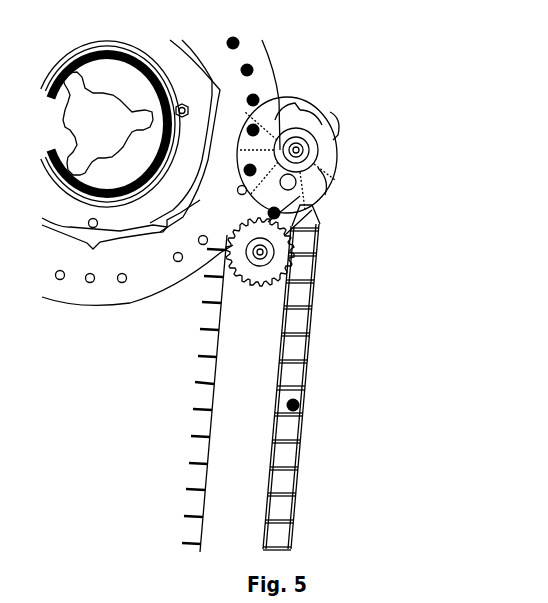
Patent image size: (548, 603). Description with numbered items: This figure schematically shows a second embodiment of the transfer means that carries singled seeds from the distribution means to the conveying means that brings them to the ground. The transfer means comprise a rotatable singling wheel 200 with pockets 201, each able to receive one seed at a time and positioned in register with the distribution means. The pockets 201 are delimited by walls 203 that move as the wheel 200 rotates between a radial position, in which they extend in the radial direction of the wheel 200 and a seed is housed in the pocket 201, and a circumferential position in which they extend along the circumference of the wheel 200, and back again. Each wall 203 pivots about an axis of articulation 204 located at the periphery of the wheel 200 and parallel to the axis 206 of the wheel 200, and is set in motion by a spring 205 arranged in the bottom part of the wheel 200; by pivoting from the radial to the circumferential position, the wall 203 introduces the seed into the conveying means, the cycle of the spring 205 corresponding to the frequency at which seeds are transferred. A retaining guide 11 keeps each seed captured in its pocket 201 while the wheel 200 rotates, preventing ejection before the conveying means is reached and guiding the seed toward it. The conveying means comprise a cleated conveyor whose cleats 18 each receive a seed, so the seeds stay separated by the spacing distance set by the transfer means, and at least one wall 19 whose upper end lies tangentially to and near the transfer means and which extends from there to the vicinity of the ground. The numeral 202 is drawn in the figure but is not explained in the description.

The retaining guide 11 is at (237, 140).
The cleats 18 is at (280, 493).
The wall 19 is at (312, 230).
The singling wheel 200 is at (378, 98).
The pockets 201 is at (285, 108).
The second jaw 202 is at (328, 168).
The walls 203 is at (307, 117).
The axis of articulation 204 is at (335, 120).
The spring 205 is at (300, 152).
The axis 206 is at (297, 153).